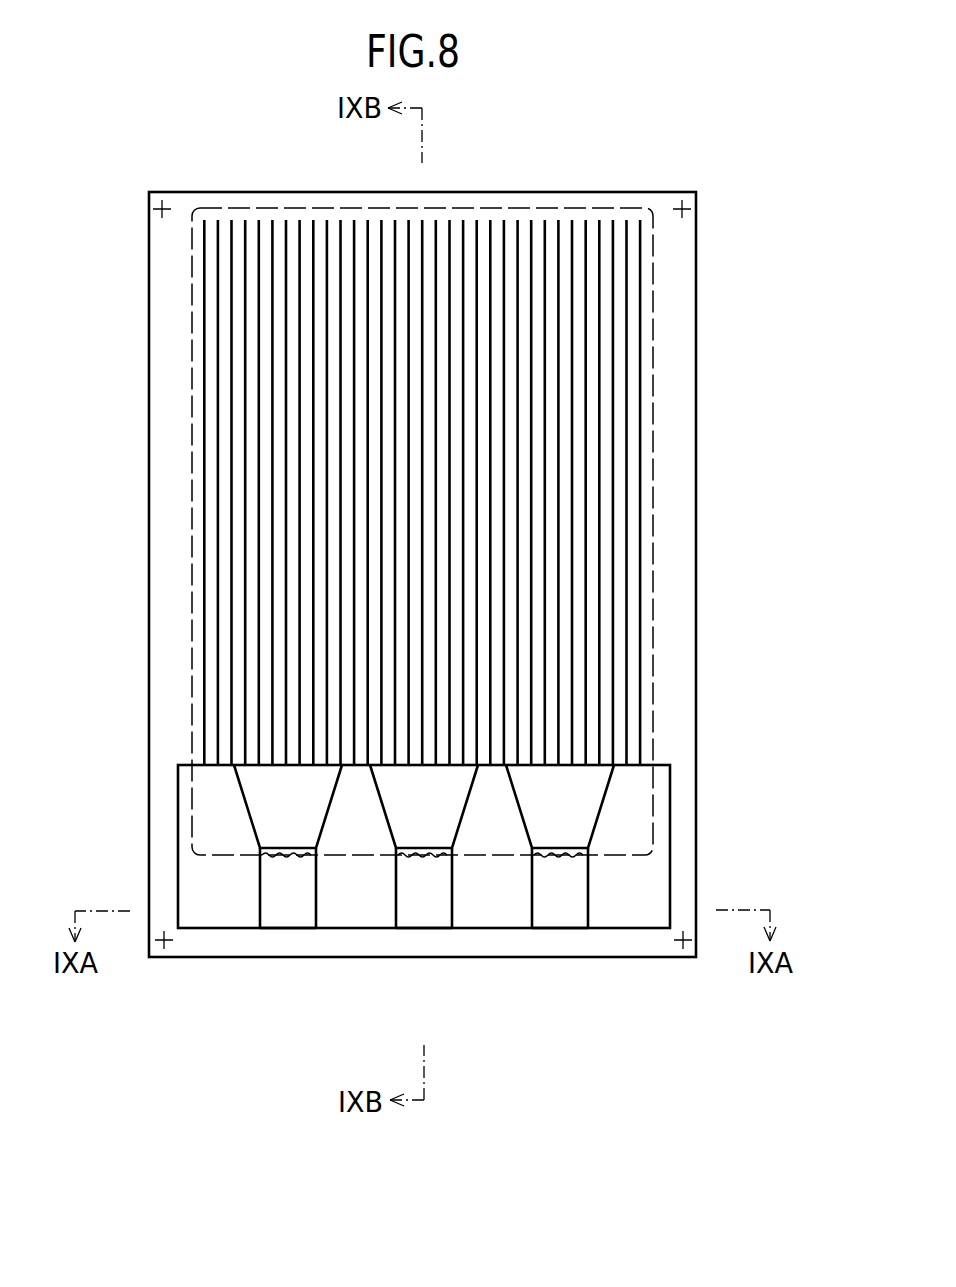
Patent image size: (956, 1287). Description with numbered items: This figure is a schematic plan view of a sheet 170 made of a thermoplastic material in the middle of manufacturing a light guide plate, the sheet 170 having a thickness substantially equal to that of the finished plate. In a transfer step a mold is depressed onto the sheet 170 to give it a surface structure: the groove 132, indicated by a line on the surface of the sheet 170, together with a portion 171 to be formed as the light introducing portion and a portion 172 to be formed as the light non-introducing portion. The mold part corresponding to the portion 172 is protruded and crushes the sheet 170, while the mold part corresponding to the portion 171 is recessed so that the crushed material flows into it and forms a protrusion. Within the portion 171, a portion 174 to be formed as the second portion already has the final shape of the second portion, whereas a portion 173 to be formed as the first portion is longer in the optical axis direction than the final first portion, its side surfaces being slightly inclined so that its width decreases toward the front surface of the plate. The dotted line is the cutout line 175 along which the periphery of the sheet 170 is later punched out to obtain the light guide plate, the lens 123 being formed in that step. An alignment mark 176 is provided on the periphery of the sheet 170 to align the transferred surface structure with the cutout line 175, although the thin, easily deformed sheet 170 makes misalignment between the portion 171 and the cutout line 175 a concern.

The lens 123 is at (568, 855).
The groove 132 is at (640, 302).
The sheet 170 is at (696, 365).
The portion to be formed as the light introducing portion 171 is at (294, 949).
The portion to be formed as the light non-introducing portion 172 is at (222, 913).
The portion to be formed as the first portion 173 is at (275, 889).
The portion to be formed as the second portion 174 is at (268, 818).
The cutout line 175 is at (654, 507).
The alignment mark 176 is at (164, 210).